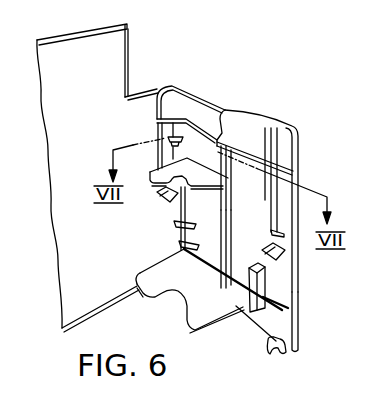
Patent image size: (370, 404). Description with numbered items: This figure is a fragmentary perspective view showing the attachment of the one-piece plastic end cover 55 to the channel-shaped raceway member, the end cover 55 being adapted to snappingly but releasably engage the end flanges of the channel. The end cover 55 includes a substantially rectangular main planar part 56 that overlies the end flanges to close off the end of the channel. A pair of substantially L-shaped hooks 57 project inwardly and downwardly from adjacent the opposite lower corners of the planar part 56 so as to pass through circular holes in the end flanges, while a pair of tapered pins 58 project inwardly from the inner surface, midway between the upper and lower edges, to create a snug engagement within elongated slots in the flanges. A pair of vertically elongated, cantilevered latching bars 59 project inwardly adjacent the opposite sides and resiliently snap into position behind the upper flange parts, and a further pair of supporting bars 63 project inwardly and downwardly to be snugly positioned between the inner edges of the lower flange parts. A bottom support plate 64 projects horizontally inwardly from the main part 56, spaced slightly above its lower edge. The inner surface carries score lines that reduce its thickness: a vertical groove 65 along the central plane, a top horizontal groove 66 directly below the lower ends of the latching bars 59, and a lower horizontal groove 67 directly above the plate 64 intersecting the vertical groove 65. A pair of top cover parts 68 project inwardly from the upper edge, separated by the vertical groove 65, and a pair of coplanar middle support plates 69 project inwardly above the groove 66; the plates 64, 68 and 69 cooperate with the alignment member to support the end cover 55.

The end cover 55 is at (301, 152).
The main planar part 56 is at (286, 282).
The L-shaped hooks 57 is at (275, 355).
The pins 58 is at (172, 203).
The latching bars 59 is at (277, 168).
The supporting bars 63 is at (292, 308).
The bottom support plate 64 is at (193, 322).
The vertical groove 65 is at (239, 157).
The top horizontal groove 66 is at (231, 236).
The lower horizontal groove 67 is at (250, 270).
The top cover parts 68 is at (180, 103).
The middle support plates 69 is at (177, 172).